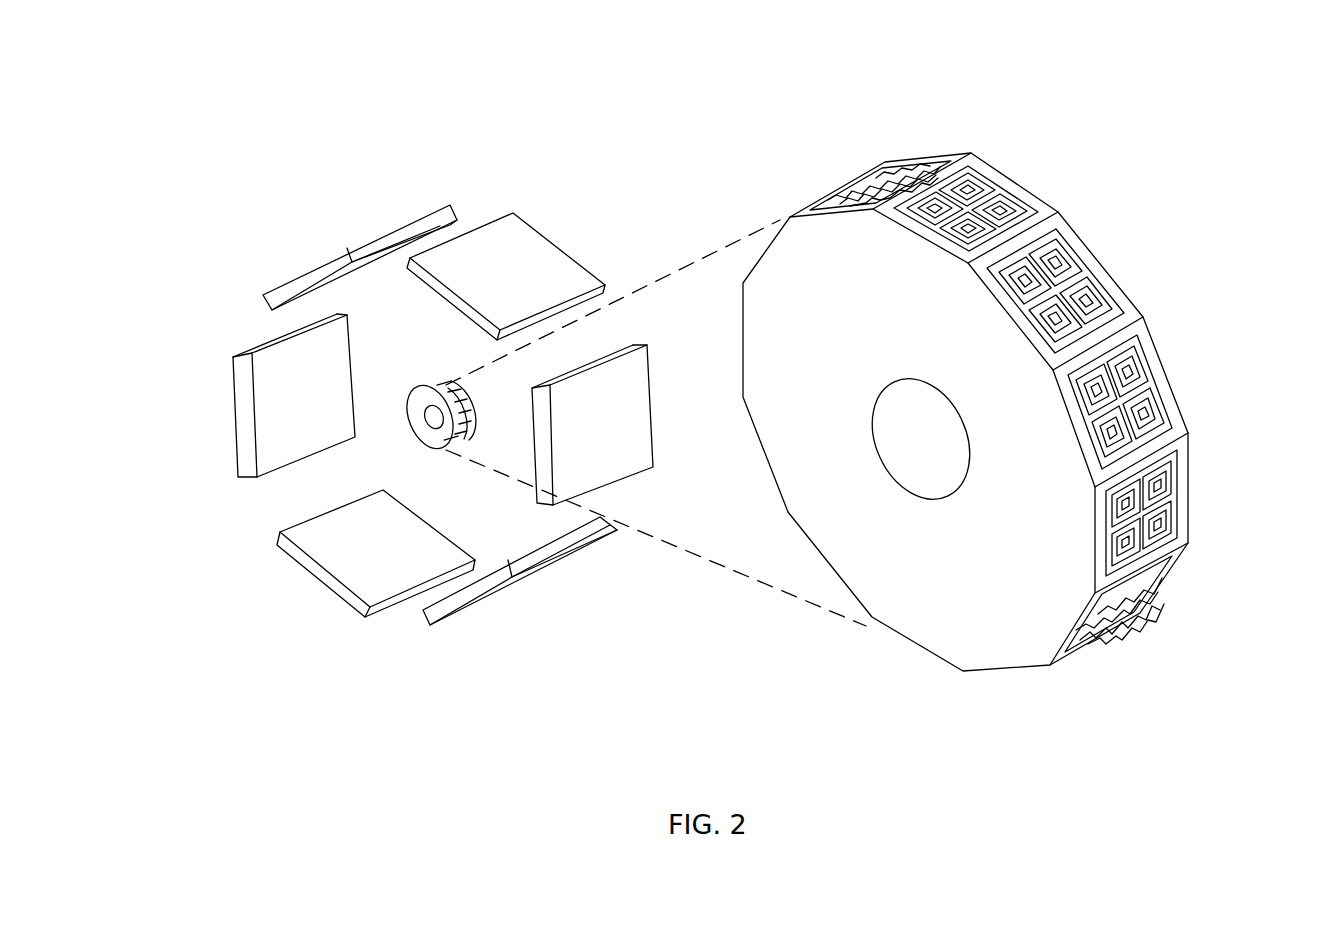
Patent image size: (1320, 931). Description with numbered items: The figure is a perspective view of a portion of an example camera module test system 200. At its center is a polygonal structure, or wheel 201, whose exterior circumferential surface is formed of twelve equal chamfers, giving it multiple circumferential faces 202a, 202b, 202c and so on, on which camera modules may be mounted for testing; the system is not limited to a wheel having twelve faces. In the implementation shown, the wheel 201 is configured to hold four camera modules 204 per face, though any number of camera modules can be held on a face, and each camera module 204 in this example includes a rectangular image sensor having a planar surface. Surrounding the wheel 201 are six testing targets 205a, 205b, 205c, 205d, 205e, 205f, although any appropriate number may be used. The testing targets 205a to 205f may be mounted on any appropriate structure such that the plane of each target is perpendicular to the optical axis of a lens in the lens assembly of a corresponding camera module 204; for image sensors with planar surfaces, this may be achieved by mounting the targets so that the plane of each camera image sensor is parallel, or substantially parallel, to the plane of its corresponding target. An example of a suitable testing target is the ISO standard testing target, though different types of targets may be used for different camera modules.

The test system 200 is at (689, 96).
The wheel 201 is at (1132, 144).
The circumferential face 202a is at (970, 160).
The circumferential face 202b is at (1186, 416).
The circumferential face 202c is at (1190, 522).
The camera module 204 is at (1085, 216).
The testing target 205a is at (576, 226).
The testing target 205b is at (654, 390).
The testing target 205c is at (562, 564).
The testing target 205d is at (276, 531).
The testing target 205e is at (246, 350).
The testing target 205f is at (416, 221).